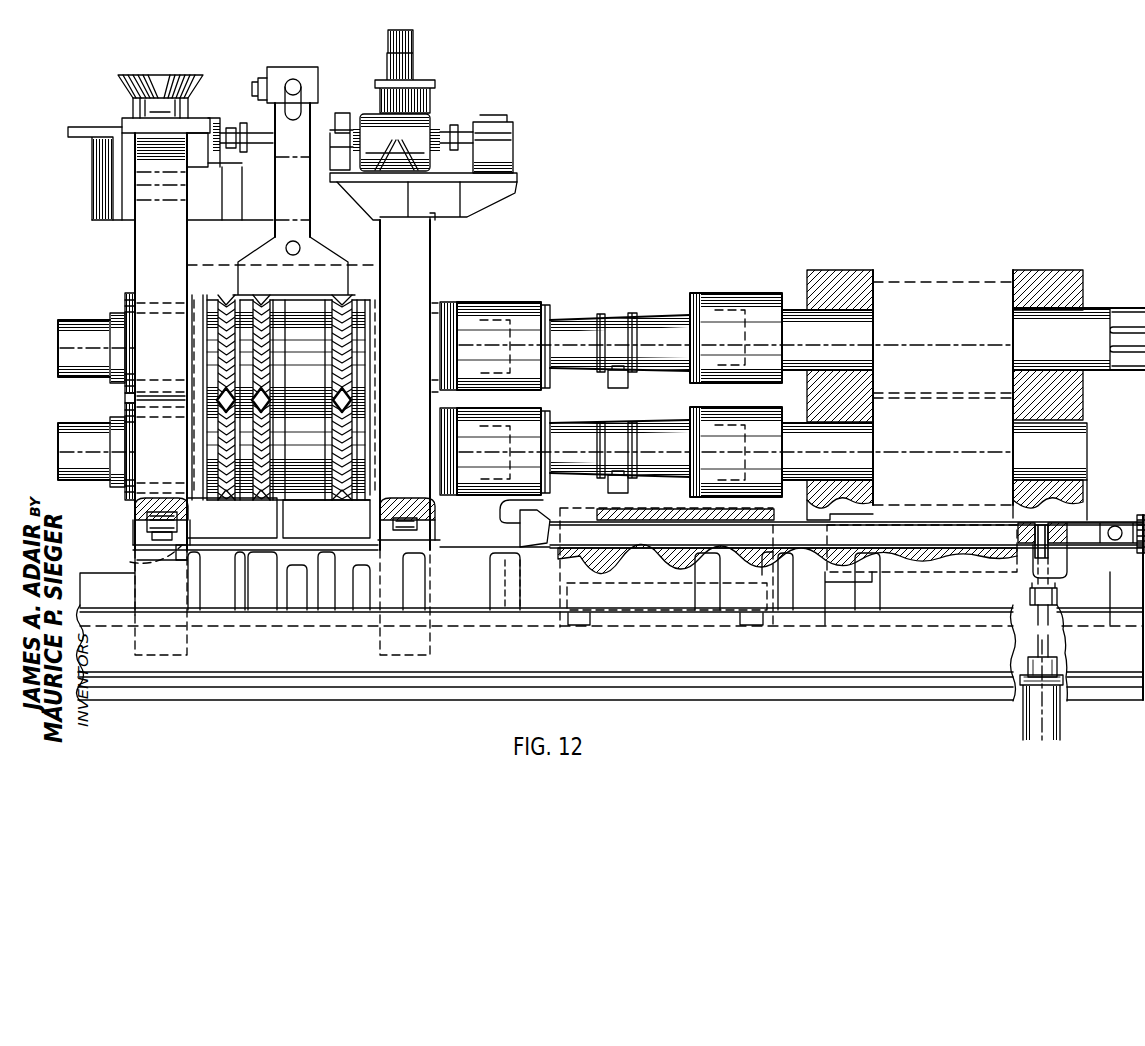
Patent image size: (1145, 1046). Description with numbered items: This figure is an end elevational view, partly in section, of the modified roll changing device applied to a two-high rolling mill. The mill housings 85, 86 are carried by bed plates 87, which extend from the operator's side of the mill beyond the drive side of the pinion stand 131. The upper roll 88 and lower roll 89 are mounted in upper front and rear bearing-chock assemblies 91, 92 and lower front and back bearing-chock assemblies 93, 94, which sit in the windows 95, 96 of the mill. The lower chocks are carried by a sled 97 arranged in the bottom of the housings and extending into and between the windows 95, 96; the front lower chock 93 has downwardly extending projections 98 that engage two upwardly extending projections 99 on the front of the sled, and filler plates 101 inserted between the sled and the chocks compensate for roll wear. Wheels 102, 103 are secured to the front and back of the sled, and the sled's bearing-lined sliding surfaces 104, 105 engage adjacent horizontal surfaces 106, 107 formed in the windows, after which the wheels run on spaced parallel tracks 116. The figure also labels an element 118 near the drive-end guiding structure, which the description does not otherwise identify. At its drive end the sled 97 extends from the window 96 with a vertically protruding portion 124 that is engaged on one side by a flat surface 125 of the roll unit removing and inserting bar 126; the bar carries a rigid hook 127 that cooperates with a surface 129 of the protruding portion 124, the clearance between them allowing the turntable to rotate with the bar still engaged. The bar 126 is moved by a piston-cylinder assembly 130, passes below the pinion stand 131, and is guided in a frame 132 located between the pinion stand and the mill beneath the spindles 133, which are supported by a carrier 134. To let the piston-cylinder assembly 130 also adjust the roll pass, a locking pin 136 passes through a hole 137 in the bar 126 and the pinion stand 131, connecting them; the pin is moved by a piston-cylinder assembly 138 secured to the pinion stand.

The mill housing 85 is at (143, 239).
The mill housing 86 is at (432, 248).
The bed plates 87 is at (1113, 658).
The upper roll 88 is at (70, 340).
The lower roll 89 is at (68, 445).
The upper front bearing-chock assembly 91 is at (126, 309).
The upper rear bearing-chock assembly 92 is at (452, 305).
The lower front bearing-chock assembly 93 is at (126, 494).
The lower back bearing-chock assembly 94 is at (447, 499).
The window 95 is at (126, 398).
The window 96 is at (455, 400).
The sled 97 is at (246, 533).
The downwardly extending projections 98 is at (140, 509).
The upwardly extending projections 99 is at (178, 548).
The filler plates 101 is at (170, 547).
The wheel 102 is at (128, 565).
The wheel 103 is at (448, 525).
The bearing-lined sliding surface 104 is at (205, 552).
The bearing-lined sliding surface 105 is at (350, 545).
The horizontal surface 106 is at (181, 556).
The horizontal surface 107 is at (392, 550).
The tracks 116 is at (250, 548).
The slide block 118 is at (520, 522).
The vertically protruding portion 124 is at (573, 538).
The flat surface 125 is at (548, 531).
The roll unit removing and inserting bar 126 is at (677, 537).
The rigid hook 127 is at (543, 512).
The surface 129 is at (527, 526).
The piston-cylinder assembly 130 is at (1143, 515).
The pinion stand 131 is at (835, 279).
The frame 132 is at (722, 562).
The spindles 133 is at (668, 336).
The carrier 134 is at (638, 492).
The locking pin 136 is at (1068, 553).
The hole 137 is at (1052, 510).
The piston-cylinder assembly 138 is at (1052, 712).